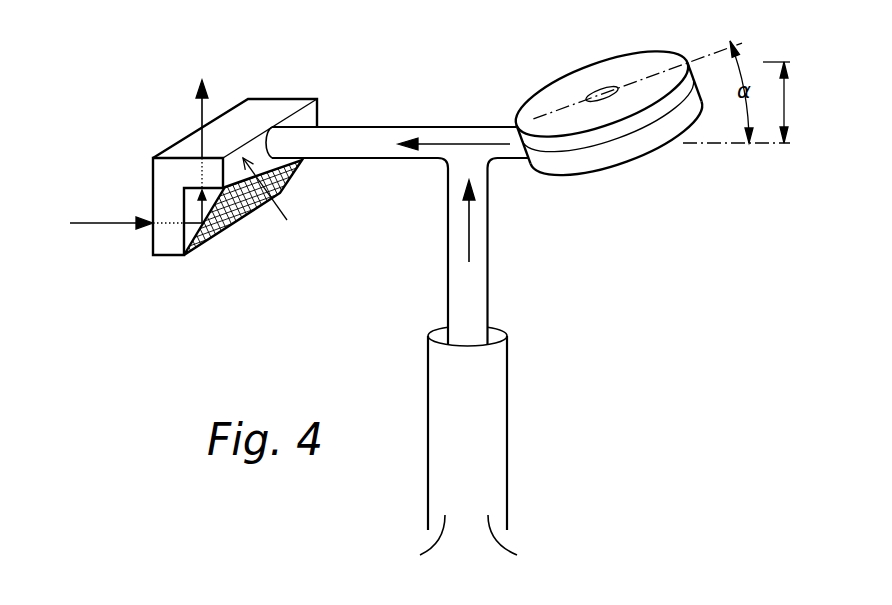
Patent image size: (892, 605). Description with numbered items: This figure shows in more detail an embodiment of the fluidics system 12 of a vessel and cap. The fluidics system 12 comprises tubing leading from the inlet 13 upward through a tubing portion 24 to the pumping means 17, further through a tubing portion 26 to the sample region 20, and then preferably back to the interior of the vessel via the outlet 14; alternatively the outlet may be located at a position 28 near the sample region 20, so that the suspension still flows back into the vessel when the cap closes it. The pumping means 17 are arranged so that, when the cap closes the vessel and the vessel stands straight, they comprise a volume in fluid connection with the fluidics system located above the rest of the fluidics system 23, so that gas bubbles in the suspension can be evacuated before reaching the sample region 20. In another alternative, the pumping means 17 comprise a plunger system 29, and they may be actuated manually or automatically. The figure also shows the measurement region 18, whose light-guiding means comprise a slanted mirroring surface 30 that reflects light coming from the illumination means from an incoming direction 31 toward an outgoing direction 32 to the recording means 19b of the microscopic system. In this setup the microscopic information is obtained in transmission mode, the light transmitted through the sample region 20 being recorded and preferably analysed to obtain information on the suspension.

The fluidics system 12 is at (485, 108).
The inlet 13 is at (417, 542).
The outlet 14 is at (519, 542).
The pumping means 17 is at (610, 137).
The measurement region 18 is at (143, 178).
The recording means 19b is at (126, 144).
The sample region 20 is at (273, 107).
The rest of the fluidics system 23 is at (787, 98).
The tubing to the pumping means 24 is at (468, 230).
The tubing to the sample region 26 is at (457, 143).
The outlet location near the sample region 28 is at (280, 200).
The plunger system 29 is at (495, 357).
The slanted mirroring surface 30 is at (213, 236).
The incoming direction 31 is at (98, 225).
The outgoing direction 32 is at (200, 112).